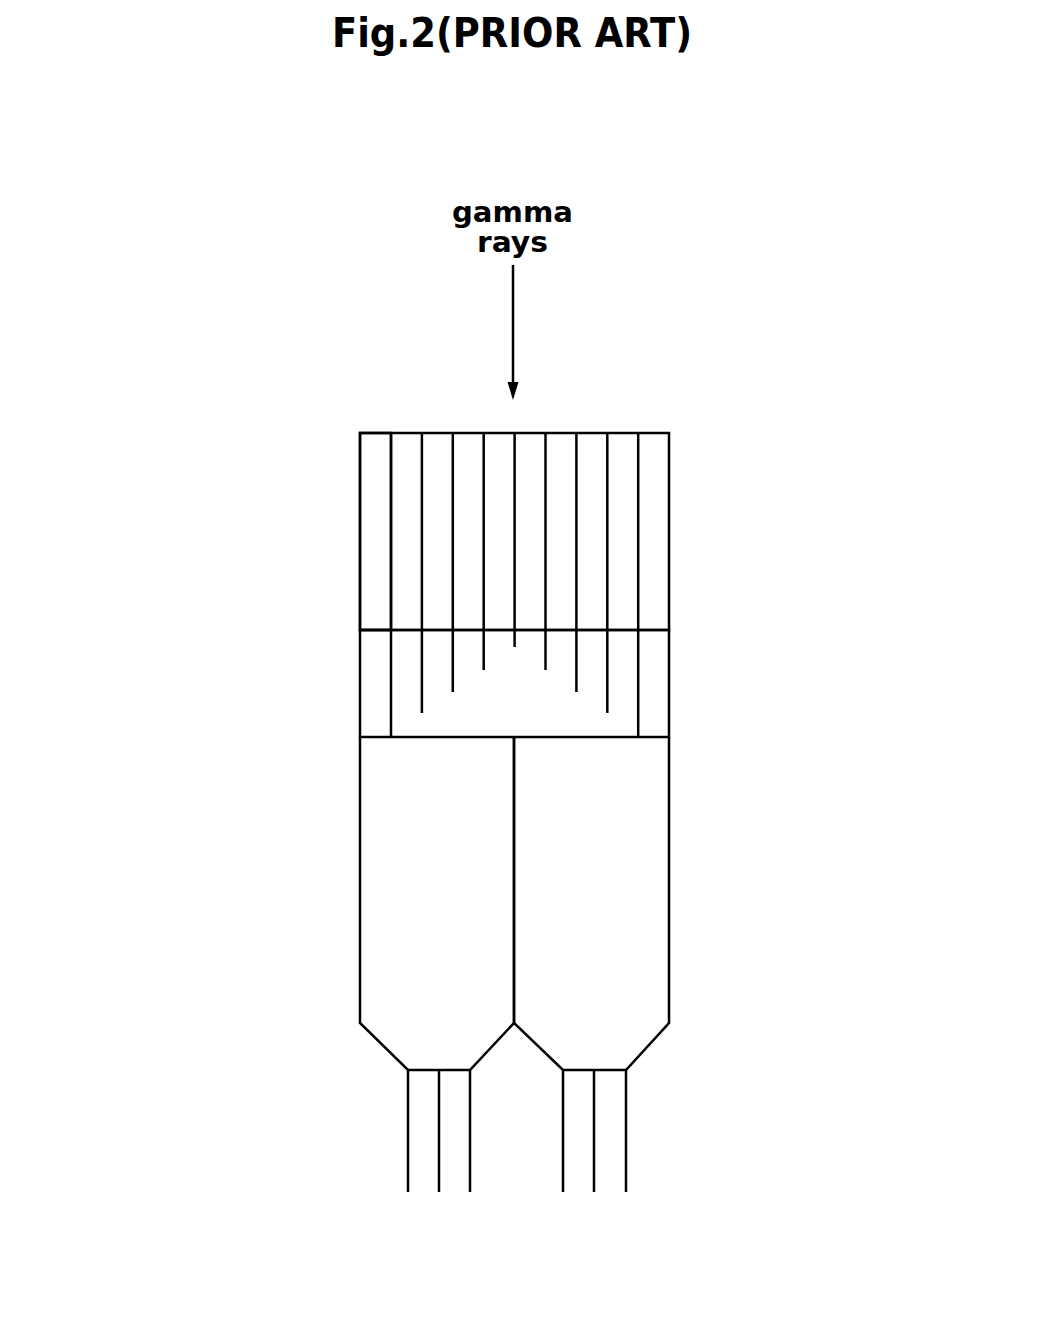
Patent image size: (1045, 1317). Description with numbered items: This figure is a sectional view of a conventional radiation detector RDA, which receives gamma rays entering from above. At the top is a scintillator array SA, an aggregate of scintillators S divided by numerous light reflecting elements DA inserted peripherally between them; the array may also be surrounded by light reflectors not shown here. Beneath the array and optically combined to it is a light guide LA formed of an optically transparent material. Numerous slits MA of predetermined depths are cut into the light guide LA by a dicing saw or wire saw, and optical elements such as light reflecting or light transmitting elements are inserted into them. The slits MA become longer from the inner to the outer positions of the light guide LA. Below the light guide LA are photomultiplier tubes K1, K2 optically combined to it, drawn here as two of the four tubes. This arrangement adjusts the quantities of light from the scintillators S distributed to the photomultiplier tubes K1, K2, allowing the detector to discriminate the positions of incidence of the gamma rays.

The radiation detector RDA is at (653, 350).
The scintillator array SA is at (673, 458).
The scintillator S is at (368, 455).
The light reflecting element DA is at (420, 487).
The light guide LA is at (670, 675).
The slit MA is at (420, 654).
The photomultiplier tube K1 is at (360, 968).
The photomultiplier tube K2 is at (670, 962).